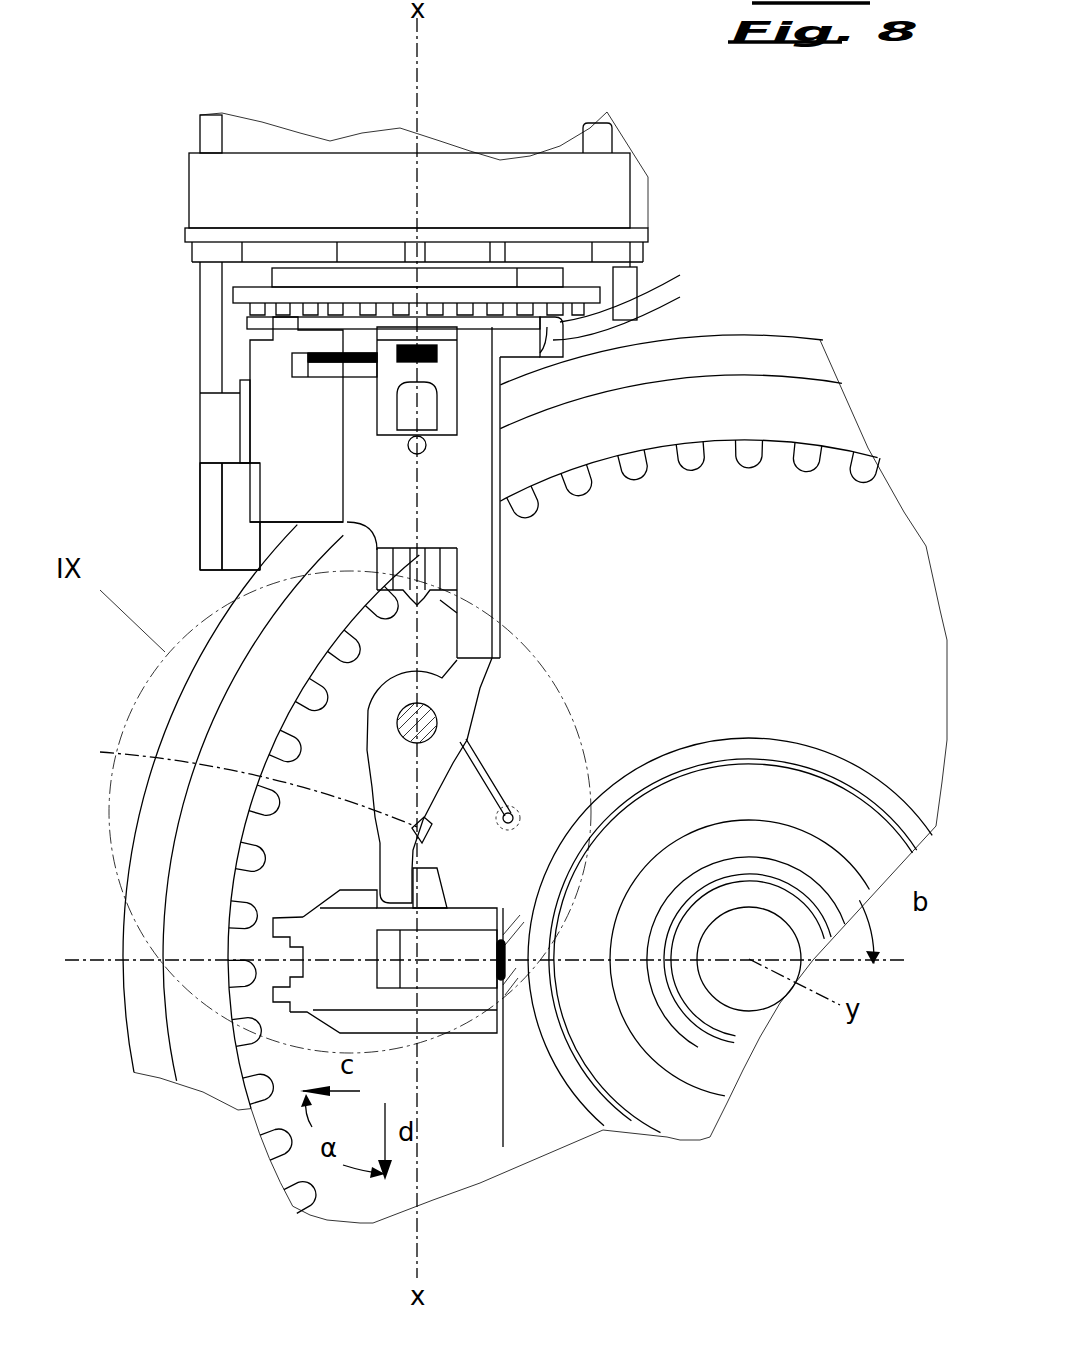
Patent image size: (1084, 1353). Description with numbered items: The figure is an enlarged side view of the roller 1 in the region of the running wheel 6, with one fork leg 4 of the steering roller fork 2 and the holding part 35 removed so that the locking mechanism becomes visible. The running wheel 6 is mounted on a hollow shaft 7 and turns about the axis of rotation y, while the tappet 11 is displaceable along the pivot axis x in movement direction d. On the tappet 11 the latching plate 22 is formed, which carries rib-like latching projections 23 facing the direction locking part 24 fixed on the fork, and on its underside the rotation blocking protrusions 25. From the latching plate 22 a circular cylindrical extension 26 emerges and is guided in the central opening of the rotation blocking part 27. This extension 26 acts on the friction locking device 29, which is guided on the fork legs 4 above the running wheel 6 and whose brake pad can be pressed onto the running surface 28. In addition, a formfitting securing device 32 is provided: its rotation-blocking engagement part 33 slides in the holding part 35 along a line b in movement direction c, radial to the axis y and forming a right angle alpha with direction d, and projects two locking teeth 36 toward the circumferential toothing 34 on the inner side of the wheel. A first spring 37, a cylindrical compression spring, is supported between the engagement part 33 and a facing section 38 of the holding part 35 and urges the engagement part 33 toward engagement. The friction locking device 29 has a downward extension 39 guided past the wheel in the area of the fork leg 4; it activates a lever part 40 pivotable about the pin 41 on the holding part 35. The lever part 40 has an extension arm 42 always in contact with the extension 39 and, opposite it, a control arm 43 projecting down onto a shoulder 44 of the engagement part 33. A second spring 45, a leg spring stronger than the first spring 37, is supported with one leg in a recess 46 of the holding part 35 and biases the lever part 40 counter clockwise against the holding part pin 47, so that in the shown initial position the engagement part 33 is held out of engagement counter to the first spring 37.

The roller 1 is at (633, 98).
The steering roller fork 2 is at (170, 373).
The fork leg 4 is at (237, 520).
The running wheel 6 is at (765, 352).
The hollow shaft 7 is at (745, 990).
The tappet 11 is at (468, 253).
The latching plate 22 is at (577, 293).
The latching projections 23 is at (547, 273).
The direction locking part 24 is at (205, 250).
The rotation blocking protrusions 25 is at (338, 310).
The circular cylindrical extension 26 is at (385, 320).
The rotation blocking part 27 is at (548, 328).
The running surface 28 is at (128, 985).
The friction locking device 29 is at (360, 478).
The formfitting securing device 32 is at (276, 897).
The rotation-blocking engagement part 33 is at (330, 987).
The circumferential toothing 34 is at (283, 747).
The holding part 35 is at (503, 980).
The locking teeth 36 is at (287, 935).
The first spring 37 is at (503, 1147).
The facing section 38 is at (510, 947).
The extension 39 is at (473, 638).
The lever part 40 is at (437, 757).
The pin 41 is at (417, 723).
The extension arm 42 is at (465, 680).
The control arm 43 is at (392, 877).
The shoulder 44 is at (430, 892).
The second spring 45 is at (483, 770).
The recess 46 is at (522, 812).
The holding part pin 47 is at (240, 778).